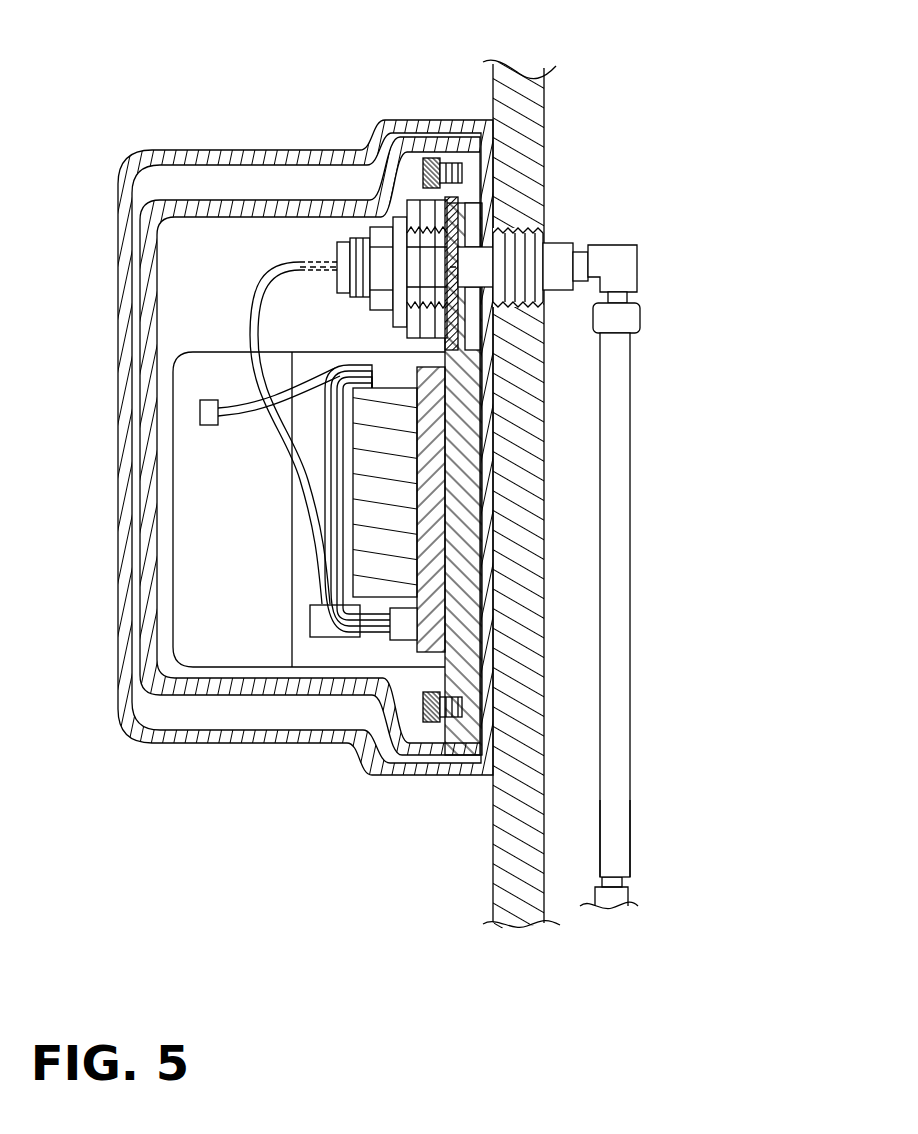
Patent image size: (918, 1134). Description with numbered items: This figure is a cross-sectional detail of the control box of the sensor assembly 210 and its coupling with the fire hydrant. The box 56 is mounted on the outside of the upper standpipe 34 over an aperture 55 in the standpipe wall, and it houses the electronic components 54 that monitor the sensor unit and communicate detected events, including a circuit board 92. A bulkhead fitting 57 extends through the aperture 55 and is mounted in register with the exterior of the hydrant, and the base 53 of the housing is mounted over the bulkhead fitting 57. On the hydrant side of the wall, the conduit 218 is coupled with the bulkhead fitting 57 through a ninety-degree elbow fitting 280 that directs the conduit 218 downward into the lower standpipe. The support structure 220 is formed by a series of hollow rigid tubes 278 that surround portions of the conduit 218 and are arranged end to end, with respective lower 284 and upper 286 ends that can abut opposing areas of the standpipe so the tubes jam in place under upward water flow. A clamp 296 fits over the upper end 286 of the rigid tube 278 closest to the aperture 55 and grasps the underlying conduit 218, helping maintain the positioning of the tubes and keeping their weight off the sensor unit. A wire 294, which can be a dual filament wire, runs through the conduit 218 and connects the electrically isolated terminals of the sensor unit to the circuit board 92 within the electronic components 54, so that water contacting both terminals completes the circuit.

The upper standpipe 34 is at (532, 143).
The base 53 is at (490, 747).
The electronic components 54 is at (237, 503).
The aperture 55 is at (522, 230).
The box 56 is at (176, 148).
The bulkhead fitting 57 is at (476, 256).
The circuit board 92 is at (437, 634).
The sensor assembly 210 is at (703, 412).
The conduit 218 is at (628, 297).
The support structure 220 is at (672, 830).
The rigid tubes 278 is at (617, 586).
The elbow fitting 280 is at (594, 232).
The lower end 284 is at (613, 875).
The upper end 286 is at (625, 886).
The wire 294 is at (306, 262).
The clamp 296 is at (637, 323).